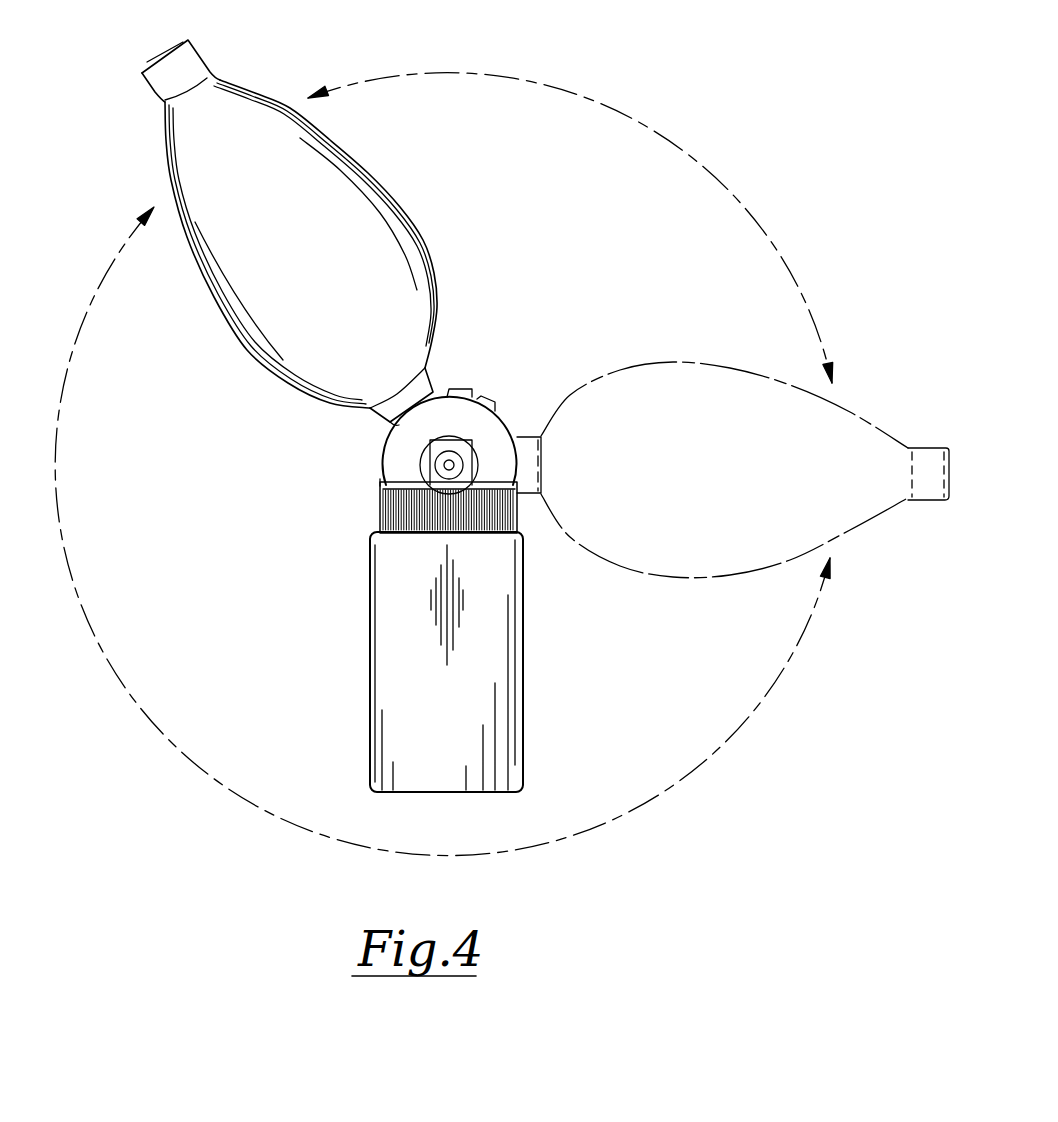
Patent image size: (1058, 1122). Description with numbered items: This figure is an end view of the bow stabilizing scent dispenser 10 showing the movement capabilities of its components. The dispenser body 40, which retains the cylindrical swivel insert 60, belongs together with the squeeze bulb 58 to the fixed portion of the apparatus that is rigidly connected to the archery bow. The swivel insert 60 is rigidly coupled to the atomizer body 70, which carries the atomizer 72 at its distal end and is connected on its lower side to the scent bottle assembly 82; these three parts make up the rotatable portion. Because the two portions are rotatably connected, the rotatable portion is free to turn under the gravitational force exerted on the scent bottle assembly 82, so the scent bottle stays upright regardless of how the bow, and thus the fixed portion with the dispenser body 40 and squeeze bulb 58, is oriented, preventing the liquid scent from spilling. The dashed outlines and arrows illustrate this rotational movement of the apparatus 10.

The bow stabilizing scent dispenser 10 is at (686, 80).
The dispenser body 40 is at (502, 465).
The squeeze bulb 58 is at (232, 100).
The swivel insert 60 is at (452, 440).
The atomizer body 70 is at (440, 449).
The atomizer 72 is at (449, 465).
The scent bottle assembly 82 is at (325, 651).